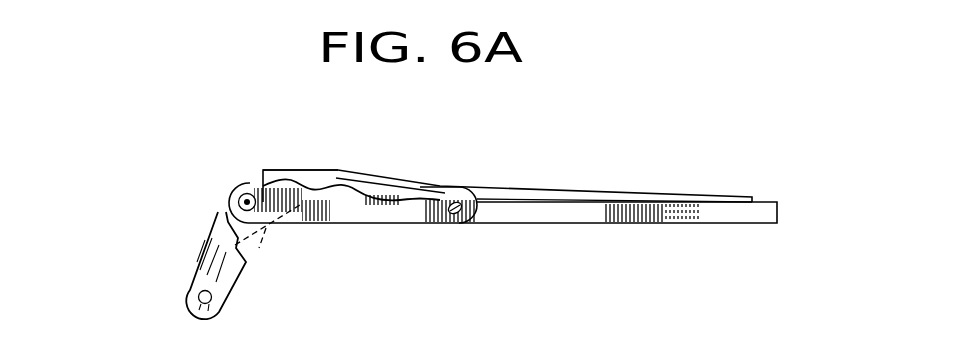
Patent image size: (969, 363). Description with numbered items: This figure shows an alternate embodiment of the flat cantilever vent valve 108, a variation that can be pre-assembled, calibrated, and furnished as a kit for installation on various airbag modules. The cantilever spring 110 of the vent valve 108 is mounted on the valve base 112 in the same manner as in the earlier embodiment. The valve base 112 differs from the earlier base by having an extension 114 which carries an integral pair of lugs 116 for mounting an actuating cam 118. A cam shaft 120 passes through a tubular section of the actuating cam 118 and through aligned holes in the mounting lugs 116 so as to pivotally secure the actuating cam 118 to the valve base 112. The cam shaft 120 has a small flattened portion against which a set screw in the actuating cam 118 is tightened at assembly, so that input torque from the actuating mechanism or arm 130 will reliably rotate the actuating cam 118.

The vent valve 108 is at (197, 133).
The cantilever spring 110 is at (488, 188).
The valve base 112 is at (651, 213).
The extension 114 is at (308, 225).
The lugs 116 is at (233, 203).
The actuating cam 118 is at (264, 176).
The cam shaft 120 is at (240, 183).
The actuating arm 130 is at (208, 262).